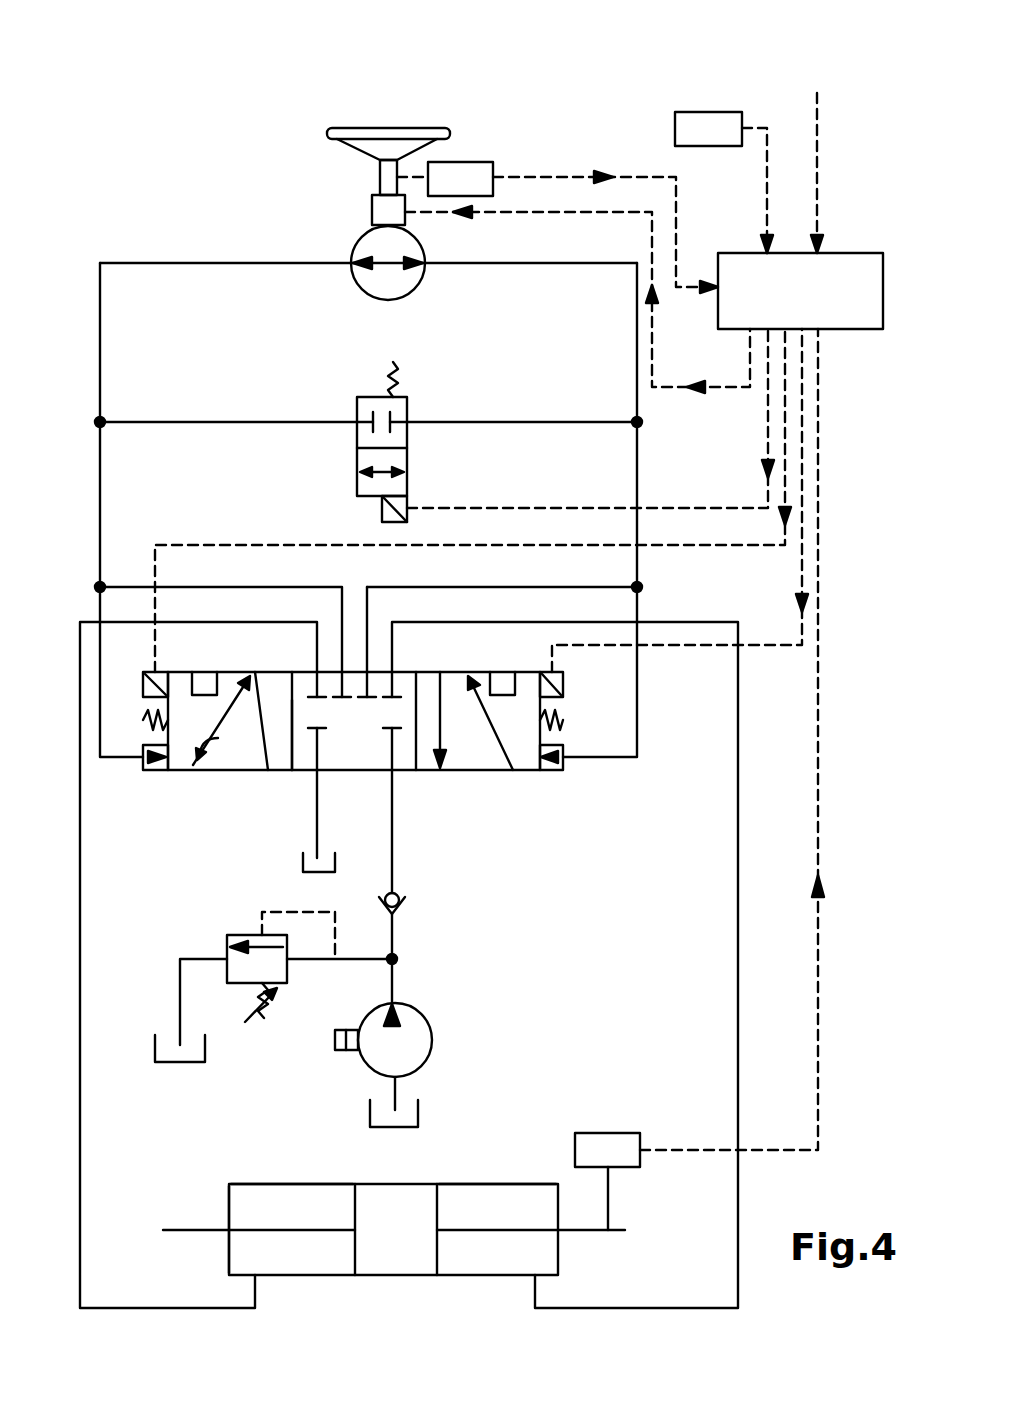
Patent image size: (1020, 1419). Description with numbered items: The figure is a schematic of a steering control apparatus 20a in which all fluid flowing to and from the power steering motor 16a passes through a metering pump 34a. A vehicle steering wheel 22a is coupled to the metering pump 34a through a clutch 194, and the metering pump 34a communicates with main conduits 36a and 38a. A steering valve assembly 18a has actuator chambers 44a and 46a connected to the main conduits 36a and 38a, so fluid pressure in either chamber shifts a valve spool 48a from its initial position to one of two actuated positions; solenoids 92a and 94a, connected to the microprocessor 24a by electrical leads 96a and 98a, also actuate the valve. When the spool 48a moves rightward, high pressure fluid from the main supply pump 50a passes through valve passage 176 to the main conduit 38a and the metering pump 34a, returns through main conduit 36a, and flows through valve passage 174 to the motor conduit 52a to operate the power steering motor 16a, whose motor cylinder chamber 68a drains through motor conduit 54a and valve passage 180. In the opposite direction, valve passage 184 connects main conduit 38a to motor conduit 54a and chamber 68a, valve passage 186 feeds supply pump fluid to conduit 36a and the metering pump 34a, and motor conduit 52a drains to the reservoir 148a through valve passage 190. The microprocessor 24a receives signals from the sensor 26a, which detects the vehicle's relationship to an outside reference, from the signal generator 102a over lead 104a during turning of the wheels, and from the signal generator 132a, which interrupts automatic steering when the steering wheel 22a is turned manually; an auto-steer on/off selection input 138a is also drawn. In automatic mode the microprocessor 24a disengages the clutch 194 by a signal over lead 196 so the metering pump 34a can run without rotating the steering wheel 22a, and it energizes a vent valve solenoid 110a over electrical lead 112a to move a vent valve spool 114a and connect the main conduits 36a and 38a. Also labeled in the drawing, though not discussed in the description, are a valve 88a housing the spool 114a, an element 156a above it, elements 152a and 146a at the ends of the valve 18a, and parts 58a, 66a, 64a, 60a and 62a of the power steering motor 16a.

The steering control apparatus 20a is at (152, 198).
The vehicle steering wheel 22a is at (380, 135).
The clutch 194 is at (372, 212).
The metering pump 34a is at (375, 277).
The signal generator 132a is at (480, 177).
The lead 196 is at (560, 212).
The sensor 26a is at (698, 118).
The auto-steer on/off selection input line 138a is at (820, 190).
The microprocessor 24a is at (848, 322).
The main conduit 36a is at (100, 385).
The main conduit 38a is at (637, 458).
The shutoff valve 88a is at (340, 474).
The vent valve spool 114a is at (397, 455).
The return spring 156a is at (400, 364).
The vent valve solenoid 110a is at (378, 508).
The electrical lead 112a is at (617, 507).
The electrical lead 96a is at (655, 547).
The electrical lead 98a is at (780, 648).
The motor conduit 52a is at (95, 968).
The motor conduit 54a is at (738, 892).
The steering valve assembly 18a is at (222, 800).
The valve passage 174 is at (200, 685).
The valve passage 176 is at (255, 700).
The valve passage 180 is at (185, 772).
The valve spool 48a is at (280, 763).
The valve passage 184 is at (510, 683).
The valve passage 186 is at (477, 703).
The valve passage 190 is at (438, 723).
The solenoid 92a is at (150, 687).
The first centering spring 152a is at (143, 720).
The actuator chamber 44a is at (148, 772).
The solenoid 94a is at (563, 685).
The second centering spring 146a is at (590, 718).
The actuator chamber 46a is at (555, 765).
The reservoir 148a is at (312, 863).
The main supply pump 50a is at (413, 1043).
The power steering motor 16a is at (395, 1304).
The piston 58a is at (405, 1203).
The first cylinder chamber 66a is at (268, 1180).
The cylinder barrel 64a is at (308, 1203).
The motor cylinder chamber 68a is at (515, 1200).
The piston rod left end 60a is at (195, 1228).
The piston rod right end 62a is at (590, 1232).
The signal generator 102a is at (605, 1142).
The lead 104a is at (818, 1112).